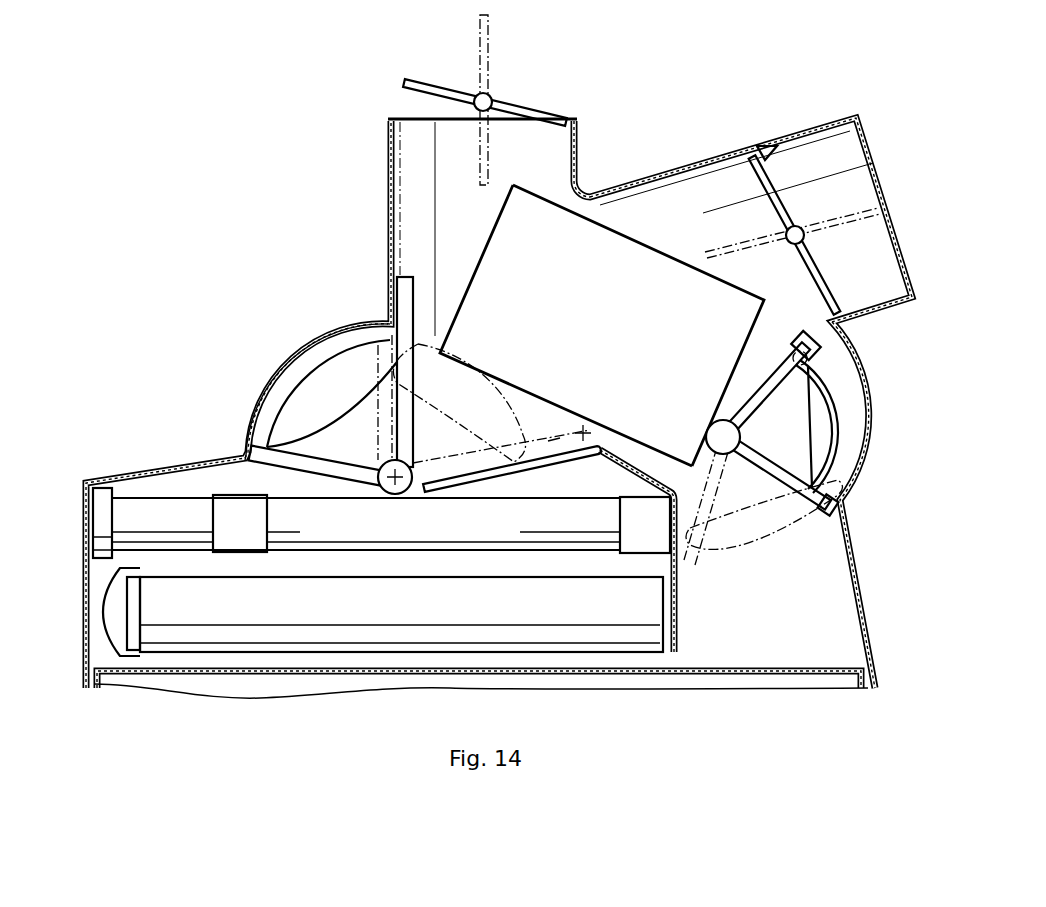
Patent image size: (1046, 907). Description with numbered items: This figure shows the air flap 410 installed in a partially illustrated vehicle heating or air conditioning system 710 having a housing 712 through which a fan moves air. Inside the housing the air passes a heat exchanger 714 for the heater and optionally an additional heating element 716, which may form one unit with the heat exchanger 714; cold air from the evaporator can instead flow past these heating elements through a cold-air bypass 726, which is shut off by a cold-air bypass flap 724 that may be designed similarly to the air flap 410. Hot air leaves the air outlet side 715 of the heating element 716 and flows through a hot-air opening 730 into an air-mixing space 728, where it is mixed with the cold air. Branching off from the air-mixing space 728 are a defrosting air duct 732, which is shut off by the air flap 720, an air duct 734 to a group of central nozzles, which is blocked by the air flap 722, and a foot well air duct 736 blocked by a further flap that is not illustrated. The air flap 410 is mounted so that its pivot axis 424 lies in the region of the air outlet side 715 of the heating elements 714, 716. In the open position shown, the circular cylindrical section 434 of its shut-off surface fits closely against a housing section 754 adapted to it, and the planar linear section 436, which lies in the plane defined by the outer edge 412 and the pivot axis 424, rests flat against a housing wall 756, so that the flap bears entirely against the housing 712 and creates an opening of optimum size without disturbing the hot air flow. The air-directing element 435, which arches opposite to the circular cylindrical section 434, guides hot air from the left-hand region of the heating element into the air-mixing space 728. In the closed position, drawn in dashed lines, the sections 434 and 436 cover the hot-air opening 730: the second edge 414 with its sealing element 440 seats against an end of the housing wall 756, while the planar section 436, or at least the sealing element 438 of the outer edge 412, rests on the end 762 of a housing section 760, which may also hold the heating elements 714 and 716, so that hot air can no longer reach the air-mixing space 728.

The heating or air conditioning system 710 is at (236, 243).
The housing 712 is at (376, 214).
The heat exchanger 714 is at (467, 625).
The air outlet side 715 is at (222, 468).
The additional heating element 716 is at (513, 540).
The air flap 720 is at (510, 110).
The air flap 722 is at (782, 206).
The cold-air bypass flap 724 is at (838, 423).
The cold-air bypass 726 is at (843, 610).
The air-mixing space 728 is at (610, 298).
The hot-air opening 730 is at (538, 414).
The defrosting air duct 732 is at (580, 150).
The air duct to central nozzles 734 is at (820, 118).
The foot well air duct 736 is at (660, 243).
The housing section 754 is at (280, 382).
The housing wall 756 is at (392, 258).
The housing section 760 is at (658, 455).
The end of housing section 762 is at (594, 452).
The air flap 410 is at (286, 354).
The outer edge 412 is at (615, 423).
The second edge 414 is at (290, 493).
The pivot axis 424 is at (396, 497).
The circular cylindrical section 434 is at (318, 340).
The air-directing element 435 is at (323, 425).
The linear section 436 is at (398, 290).
The sealing element 438 is at (590, 417).
The sealing element 440 is at (330, 474).